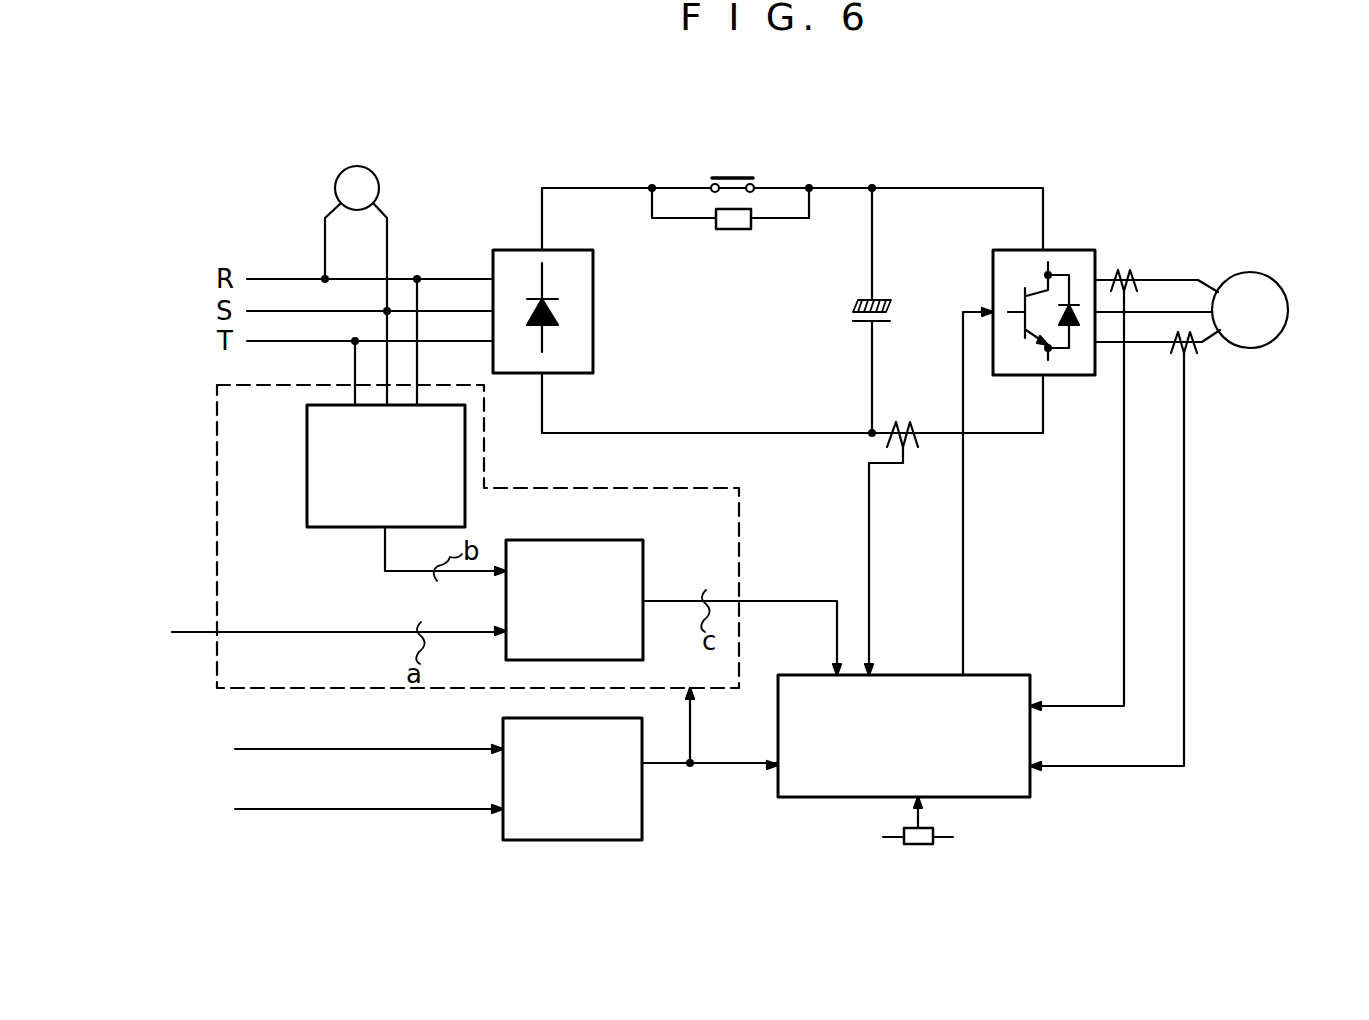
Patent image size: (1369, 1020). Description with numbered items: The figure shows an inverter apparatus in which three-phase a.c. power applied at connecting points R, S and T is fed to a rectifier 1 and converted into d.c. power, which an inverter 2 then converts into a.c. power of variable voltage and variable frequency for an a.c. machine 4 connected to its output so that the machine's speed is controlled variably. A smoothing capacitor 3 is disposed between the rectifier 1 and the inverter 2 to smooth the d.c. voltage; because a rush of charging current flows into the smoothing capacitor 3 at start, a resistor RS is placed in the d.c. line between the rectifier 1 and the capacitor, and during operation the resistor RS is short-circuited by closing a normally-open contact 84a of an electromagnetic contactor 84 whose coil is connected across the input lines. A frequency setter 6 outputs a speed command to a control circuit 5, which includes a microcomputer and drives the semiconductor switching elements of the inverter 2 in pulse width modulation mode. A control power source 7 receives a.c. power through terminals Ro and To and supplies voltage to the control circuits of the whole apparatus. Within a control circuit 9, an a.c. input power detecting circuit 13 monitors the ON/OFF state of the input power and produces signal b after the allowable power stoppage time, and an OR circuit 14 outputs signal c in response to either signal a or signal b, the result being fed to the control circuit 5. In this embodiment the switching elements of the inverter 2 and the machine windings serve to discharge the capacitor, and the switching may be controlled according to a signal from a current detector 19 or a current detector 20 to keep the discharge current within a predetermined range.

The rectifier 1 is at (513, 250).
The inverter 2 is at (1082, 248).
The smoothing capacitor 3 is at (850, 303).
The a.c. machine 4 is at (1275, 281).
The control circuit 5 is at (1020, 675).
The frequency setter 6 is at (918, 845).
The control power source 7 is at (643, 818).
The control circuit 9 is at (217, 510).
The a.c. input power detecting circuit 13 is at (307, 431).
The OR circuit 14 is at (615, 540).
The current detector 19 is at (1135, 267).
The current detector 20 is at (912, 420).
The electromagnetic contactor 84 is at (378, 176).
The normally-open contact 84a is at (732, 162).
The resistor RS is at (733, 229).